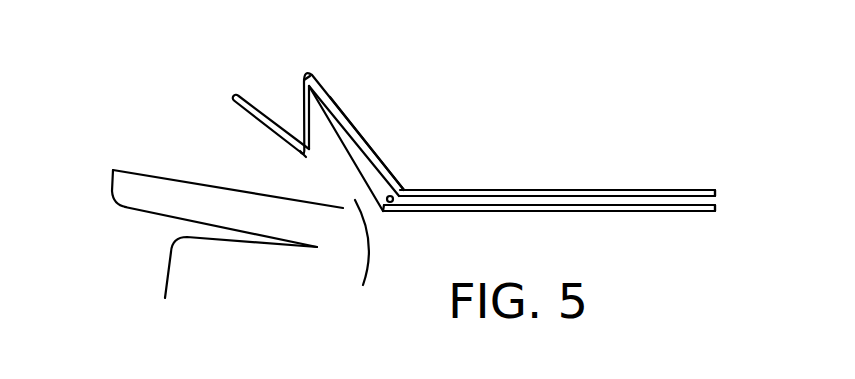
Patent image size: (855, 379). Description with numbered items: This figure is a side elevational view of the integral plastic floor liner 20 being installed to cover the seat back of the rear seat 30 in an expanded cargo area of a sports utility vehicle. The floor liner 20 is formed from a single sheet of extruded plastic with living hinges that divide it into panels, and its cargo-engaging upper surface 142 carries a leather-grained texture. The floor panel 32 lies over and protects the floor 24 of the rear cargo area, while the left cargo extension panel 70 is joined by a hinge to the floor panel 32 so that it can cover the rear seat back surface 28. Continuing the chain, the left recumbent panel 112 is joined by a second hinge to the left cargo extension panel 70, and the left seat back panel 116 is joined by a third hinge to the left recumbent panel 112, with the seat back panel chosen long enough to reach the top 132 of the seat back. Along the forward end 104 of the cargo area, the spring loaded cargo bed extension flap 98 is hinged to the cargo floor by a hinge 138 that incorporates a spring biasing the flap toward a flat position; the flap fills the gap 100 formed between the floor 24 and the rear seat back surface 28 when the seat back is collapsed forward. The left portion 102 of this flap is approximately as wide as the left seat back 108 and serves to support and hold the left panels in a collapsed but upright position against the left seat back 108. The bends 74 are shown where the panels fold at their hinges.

The floor liner 20 is at (452, 106).
The floor 24 is at (593, 211).
The rear seat back surface 28 is at (155, 204).
The rear seat 30 is at (128, 204).
The floor panel 32 is at (501, 191).
The left cargo extension panel 70 is at (328, 95).
The bend 74 is at (303, 68).
The spring loaded cargo bed extension flap 98 is at (338, 128).
The gap 100 is at (365, 258).
The left portion of cargo bed extension flap 102 is at (364, 162).
The forward end of cargo area 104 is at (403, 208).
The left seat back 108 is at (132, 169).
The left recumbent panel 112 is at (302, 100).
The left seat back panel 116 is at (249, 97).
The top of seat back 132 is at (112, 174).
The hinge 138 is at (384, 216).
The cargo-engaging upper surface 142 is at (687, 190).